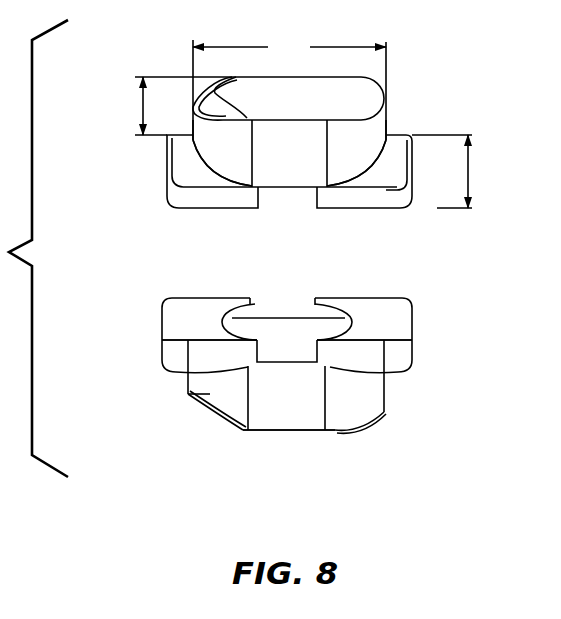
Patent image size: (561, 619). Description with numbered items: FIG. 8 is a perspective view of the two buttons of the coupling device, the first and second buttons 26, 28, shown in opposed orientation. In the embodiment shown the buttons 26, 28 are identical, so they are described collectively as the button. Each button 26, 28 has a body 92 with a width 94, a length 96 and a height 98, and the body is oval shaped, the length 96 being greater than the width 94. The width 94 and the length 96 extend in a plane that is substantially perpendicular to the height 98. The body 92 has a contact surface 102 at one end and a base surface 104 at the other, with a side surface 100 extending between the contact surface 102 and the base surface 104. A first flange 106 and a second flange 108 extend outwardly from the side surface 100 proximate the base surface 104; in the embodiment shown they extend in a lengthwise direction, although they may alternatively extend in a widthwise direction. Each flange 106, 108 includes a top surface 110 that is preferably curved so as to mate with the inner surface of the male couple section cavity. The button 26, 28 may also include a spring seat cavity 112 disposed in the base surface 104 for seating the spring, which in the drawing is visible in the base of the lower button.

The first button 26 is at (462, 297).
The second button 28 is at (472, 84).
The body 92 is at (390, 80).
The width 94 is at (143, 101).
The length 96 is at (289, 87).
The height 98 is at (468, 160).
The side surface 100 is at (233, 158).
The contact surface 102 is at (310, 108).
The base surface 104 is at (198, 209).
The first flange 106 is at (163, 160).
The second flange 108 is at (418, 182).
The top surface 110 is at (394, 146).
The spring seat cavity 112 is at (285, 325).